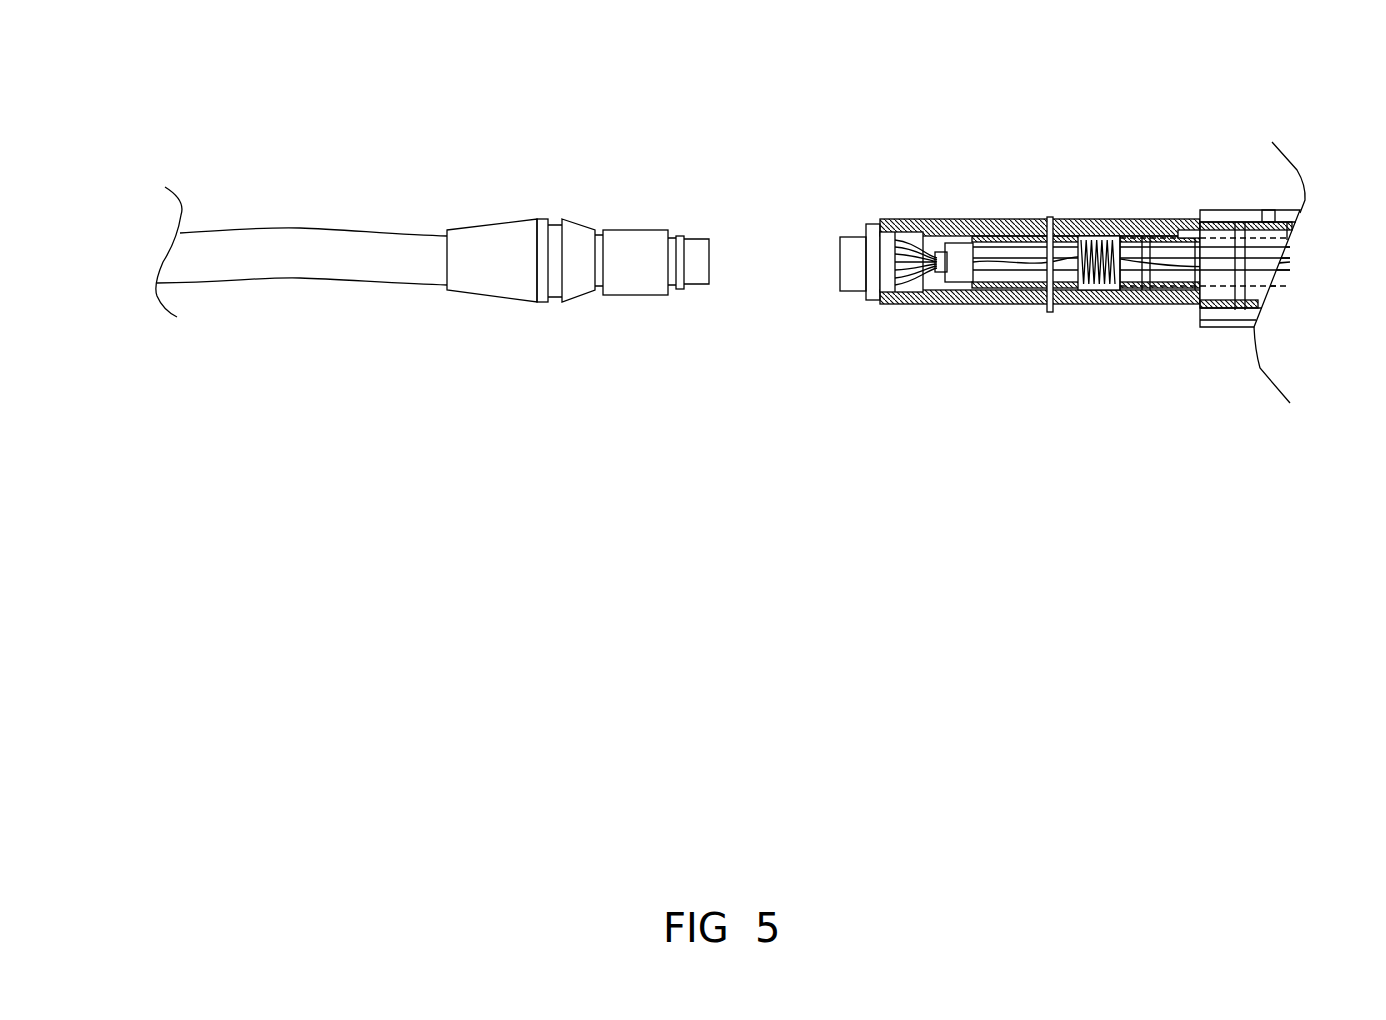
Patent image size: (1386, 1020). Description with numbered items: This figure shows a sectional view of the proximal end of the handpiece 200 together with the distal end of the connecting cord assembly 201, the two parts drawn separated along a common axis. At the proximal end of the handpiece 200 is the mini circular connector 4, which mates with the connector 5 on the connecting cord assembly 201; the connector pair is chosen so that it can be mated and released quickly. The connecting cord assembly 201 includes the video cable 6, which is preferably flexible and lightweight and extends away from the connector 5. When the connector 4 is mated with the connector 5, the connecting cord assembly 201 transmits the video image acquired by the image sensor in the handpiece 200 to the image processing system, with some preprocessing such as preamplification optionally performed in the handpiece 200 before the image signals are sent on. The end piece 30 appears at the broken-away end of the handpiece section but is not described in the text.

The mini circular connector 4 is at (851, 292).
The connector 5 is at (630, 229).
The video cable 6 is at (348, 278).
The housing end piece 30 is at (1290, 404).
The handpiece 200 is at (1085, 306).
The connecting cord assembly 201 is at (343, 283).